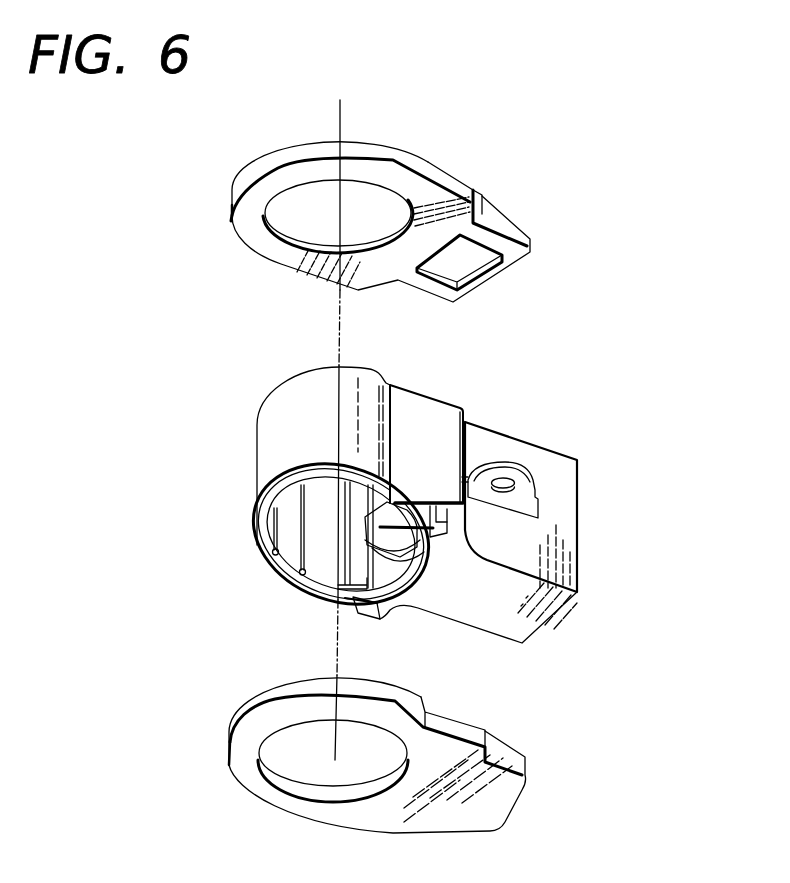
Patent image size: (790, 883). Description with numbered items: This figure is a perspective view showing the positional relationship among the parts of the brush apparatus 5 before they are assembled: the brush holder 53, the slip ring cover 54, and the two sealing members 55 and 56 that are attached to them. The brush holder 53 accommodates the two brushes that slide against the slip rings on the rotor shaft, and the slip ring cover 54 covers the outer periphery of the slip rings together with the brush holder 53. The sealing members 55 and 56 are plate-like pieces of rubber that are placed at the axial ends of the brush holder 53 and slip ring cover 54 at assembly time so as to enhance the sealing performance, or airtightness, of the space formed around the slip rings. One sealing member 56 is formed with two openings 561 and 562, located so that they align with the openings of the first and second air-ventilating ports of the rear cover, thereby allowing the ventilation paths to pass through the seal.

The brush apparatus 5 is at (472, 385).
The brush holder 53 is at (557, 503).
The slip ring cover 54 is at (298, 397).
The sealing member 55 is at (503, 757).
The sealing member 56 is at (393, 234).
The opening 561 is at (298, 211).
The opening 562 is at (462, 255).